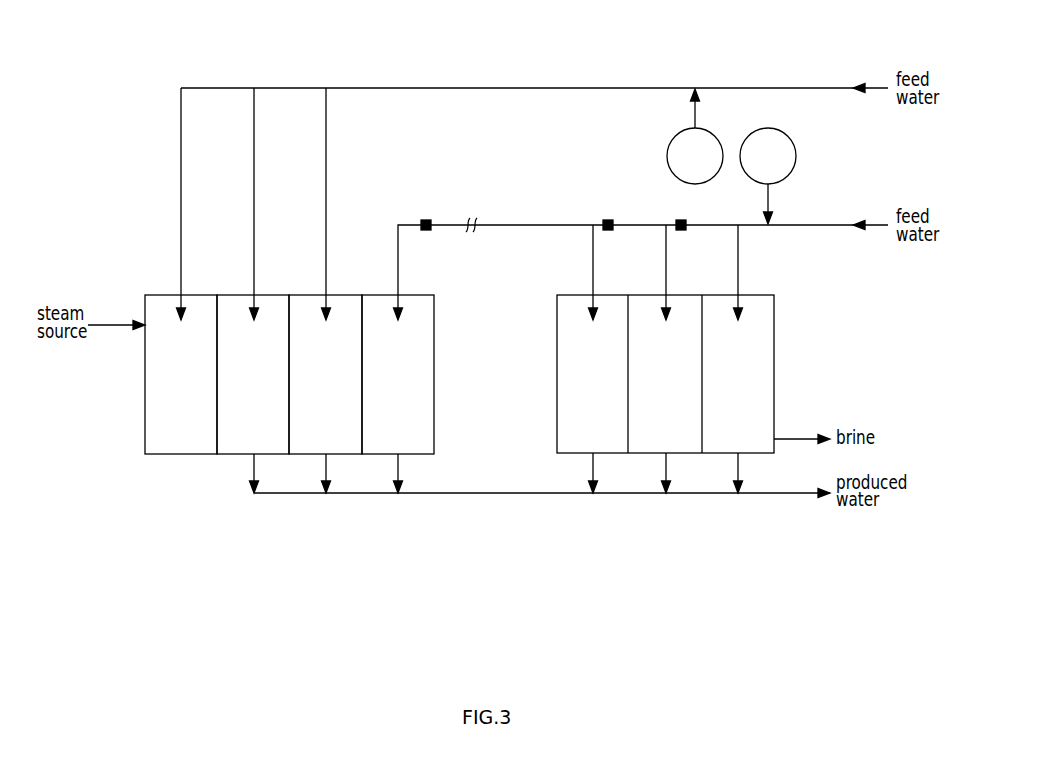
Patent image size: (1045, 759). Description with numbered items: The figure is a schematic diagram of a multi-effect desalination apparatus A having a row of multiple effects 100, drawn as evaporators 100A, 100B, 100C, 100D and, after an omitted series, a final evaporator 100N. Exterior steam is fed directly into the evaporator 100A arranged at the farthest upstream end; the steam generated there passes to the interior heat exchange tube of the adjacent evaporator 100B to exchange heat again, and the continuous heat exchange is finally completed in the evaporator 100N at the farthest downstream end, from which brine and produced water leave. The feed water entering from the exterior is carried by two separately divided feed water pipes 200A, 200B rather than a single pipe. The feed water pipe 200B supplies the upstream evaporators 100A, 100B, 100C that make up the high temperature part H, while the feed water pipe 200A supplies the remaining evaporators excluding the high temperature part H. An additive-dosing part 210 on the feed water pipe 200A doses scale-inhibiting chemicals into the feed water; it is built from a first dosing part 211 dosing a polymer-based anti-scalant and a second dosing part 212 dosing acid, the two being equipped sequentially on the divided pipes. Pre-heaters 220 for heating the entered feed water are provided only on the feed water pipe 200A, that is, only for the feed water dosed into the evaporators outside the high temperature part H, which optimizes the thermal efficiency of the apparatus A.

The effect 100 is at (467, 484).
The evaporator at the farthest upstream end 100A is at (193, 450).
The adjacent evaporator 100B is at (270, 450).
The effect 100C is at (350, 450).
The effect 100D is at (422, 450).
The evaporator at the farthest downstream end 100N is at (758, 450).
The feed water pipe 200A is at (632, 223).
The feed water pipe 200B is at (535, 86).
The additive-dosing part 210 is at (748, 182).
The first dosing part 211 is at (781, 167).
The second dosing part 212 is at (708, 167).
The pre-heater 220 is at (681, 218).
The high temperature part H is at (277, 580).
The multi-effect desalination apparatus A is at (856, 35).